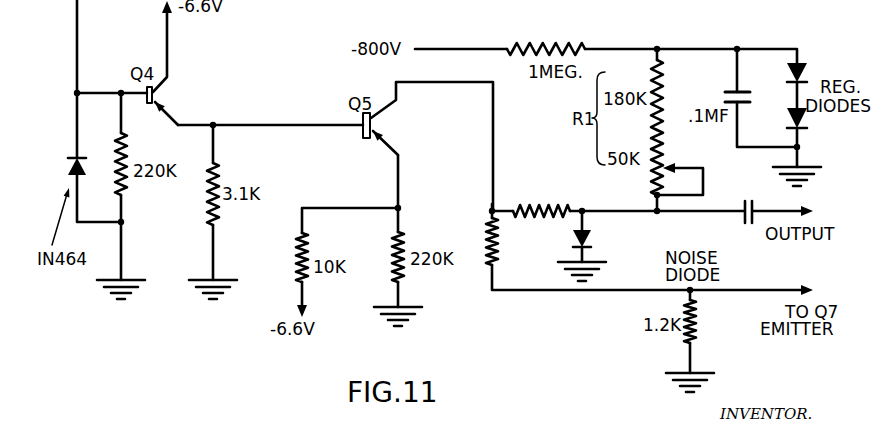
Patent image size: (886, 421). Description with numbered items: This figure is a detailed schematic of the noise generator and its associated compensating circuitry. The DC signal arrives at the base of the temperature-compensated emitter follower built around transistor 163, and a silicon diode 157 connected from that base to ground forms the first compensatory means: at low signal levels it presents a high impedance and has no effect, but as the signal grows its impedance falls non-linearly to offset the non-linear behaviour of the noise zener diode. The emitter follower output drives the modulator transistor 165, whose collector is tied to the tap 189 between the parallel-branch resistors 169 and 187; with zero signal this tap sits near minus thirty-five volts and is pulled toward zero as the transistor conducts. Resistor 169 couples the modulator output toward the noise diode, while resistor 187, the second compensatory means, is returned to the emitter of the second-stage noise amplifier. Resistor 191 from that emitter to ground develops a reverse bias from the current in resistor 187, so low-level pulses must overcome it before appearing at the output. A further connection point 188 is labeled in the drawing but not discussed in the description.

The silicon diode 157 is at (71, 168).
The transistor 163 is at (157, 95).
The transistor 165 is at (362, 128).
The resistor 169 is at (563, 212).
The resistor 187 is at (492, 257).
The junction node 188 is at (490, 211).
The tap 189 is at (662, 152).
The resistor 191 is at (697, 328).